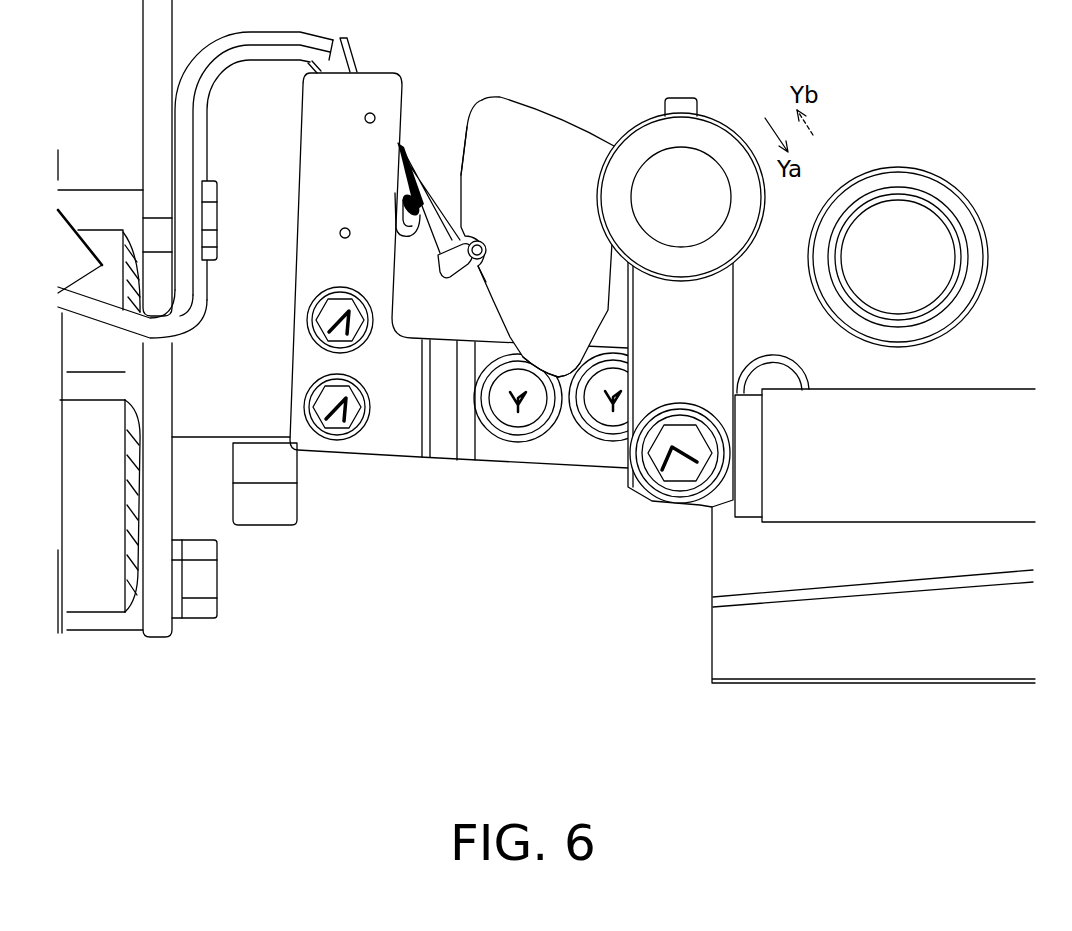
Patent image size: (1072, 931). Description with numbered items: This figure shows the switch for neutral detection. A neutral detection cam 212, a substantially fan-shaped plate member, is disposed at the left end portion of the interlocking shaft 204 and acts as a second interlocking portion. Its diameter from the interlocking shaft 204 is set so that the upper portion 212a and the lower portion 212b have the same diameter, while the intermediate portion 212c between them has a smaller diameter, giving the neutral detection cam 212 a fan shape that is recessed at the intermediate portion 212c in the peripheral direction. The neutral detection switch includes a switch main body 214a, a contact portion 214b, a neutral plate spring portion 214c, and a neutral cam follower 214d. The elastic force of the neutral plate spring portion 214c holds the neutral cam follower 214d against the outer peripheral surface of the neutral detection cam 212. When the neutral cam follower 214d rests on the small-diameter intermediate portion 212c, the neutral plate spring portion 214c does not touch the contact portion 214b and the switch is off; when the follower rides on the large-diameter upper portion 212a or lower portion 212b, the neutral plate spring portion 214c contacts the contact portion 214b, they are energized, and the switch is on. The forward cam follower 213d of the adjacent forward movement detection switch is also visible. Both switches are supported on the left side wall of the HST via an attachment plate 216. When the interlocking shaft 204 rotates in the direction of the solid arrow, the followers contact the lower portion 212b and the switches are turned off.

The interlocking shaft 204 is at (715, 137).
The neutral detection cam 212 is at (532, 125).
The upper portion 212a is at (465, 143).
The lower portion 212b is at (492, 312).
The intermediate portion 212c is at (479, 259).
The forward cam follower 213d is at (453, 262).
The switch main body 214a is at (400, 222).
The contact portion 214b is at (400, 197).
The neutral plate spring portion 214c is at (437, 220).
The neutral cam follower 214d is at (482, 243).
The attachment plate 216 is at (385, 445).